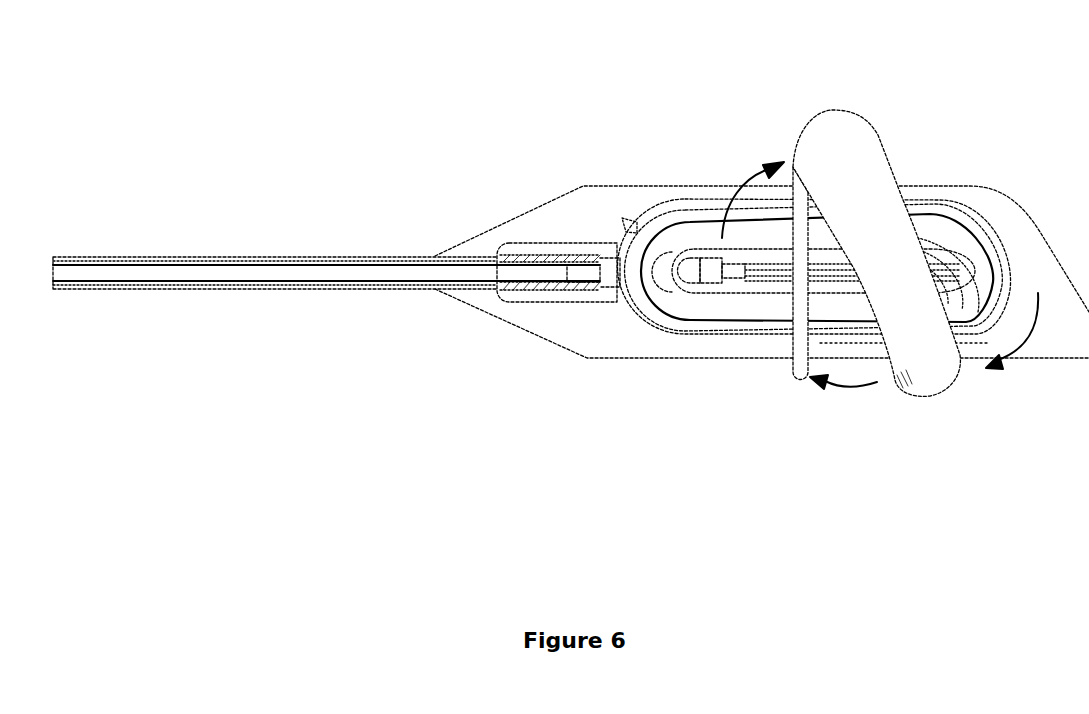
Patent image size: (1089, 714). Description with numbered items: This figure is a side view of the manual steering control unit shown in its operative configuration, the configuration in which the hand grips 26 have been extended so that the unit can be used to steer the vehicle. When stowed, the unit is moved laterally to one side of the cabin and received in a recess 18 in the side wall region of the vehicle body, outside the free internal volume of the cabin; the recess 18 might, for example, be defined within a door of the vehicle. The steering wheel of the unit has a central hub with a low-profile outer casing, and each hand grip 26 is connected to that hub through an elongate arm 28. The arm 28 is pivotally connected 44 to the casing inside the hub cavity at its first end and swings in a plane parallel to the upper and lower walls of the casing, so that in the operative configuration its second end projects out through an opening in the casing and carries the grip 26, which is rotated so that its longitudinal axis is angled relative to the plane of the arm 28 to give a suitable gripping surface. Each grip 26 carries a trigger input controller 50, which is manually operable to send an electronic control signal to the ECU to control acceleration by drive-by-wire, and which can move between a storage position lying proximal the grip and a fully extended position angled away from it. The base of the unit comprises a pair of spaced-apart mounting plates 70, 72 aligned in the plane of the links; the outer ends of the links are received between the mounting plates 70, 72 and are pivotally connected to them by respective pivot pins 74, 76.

The recess 18 is at (627, 187).
The hand grip 26 is at (862, 150).
The elongate arm 28 is at (678, 287).
The pivotal connection 44 is at (708, 275).
The trigger input controller 50 is at (797, 335).
The mounting plate 70 is at (540, 245).
The mounting plate 72 is at (525, 293).
The pivot pin 74 is at (550, 283).
The pivot pin 76 is at (585, 285).